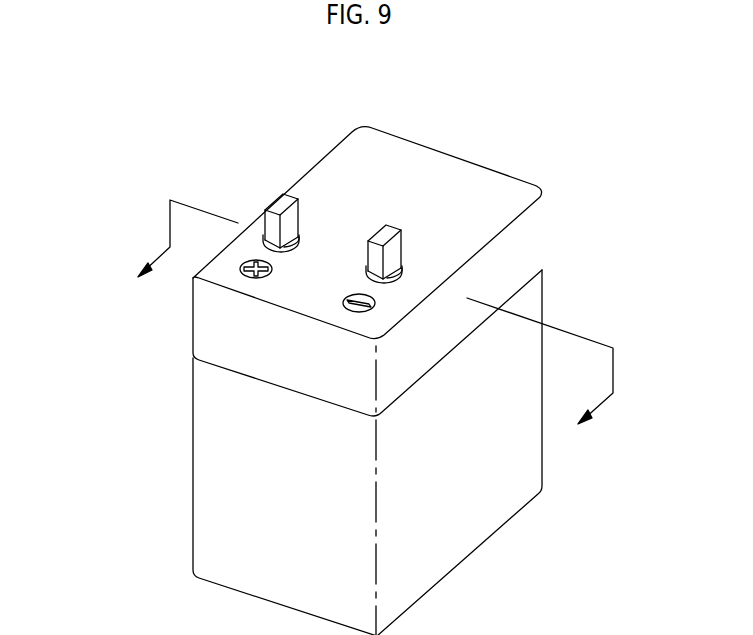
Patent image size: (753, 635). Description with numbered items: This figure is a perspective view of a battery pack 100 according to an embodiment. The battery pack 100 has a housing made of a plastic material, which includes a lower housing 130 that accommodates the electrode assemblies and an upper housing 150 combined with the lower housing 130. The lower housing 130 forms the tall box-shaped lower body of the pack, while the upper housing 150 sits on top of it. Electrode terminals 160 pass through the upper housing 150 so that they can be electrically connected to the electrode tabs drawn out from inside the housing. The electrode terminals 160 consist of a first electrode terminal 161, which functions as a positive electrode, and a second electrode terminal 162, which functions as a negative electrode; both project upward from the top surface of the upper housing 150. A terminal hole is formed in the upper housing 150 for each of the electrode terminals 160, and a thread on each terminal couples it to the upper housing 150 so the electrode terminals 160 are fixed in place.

The battery pack 100 is at (128, 88).
The lower housing 130 is at (207, 445).
The upper housing 150 is at (201, 325).
The electrode terminals 160 is at (304, 125).
The first electrode terminal 161 is at (270, 215).
The second electrode terminal 162 is at (373, 250).